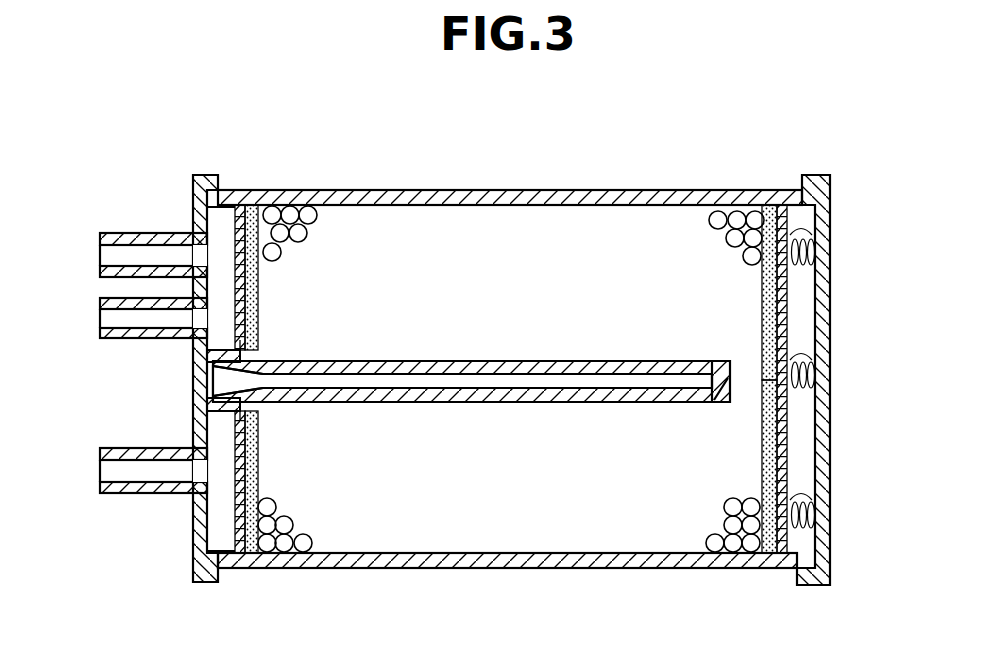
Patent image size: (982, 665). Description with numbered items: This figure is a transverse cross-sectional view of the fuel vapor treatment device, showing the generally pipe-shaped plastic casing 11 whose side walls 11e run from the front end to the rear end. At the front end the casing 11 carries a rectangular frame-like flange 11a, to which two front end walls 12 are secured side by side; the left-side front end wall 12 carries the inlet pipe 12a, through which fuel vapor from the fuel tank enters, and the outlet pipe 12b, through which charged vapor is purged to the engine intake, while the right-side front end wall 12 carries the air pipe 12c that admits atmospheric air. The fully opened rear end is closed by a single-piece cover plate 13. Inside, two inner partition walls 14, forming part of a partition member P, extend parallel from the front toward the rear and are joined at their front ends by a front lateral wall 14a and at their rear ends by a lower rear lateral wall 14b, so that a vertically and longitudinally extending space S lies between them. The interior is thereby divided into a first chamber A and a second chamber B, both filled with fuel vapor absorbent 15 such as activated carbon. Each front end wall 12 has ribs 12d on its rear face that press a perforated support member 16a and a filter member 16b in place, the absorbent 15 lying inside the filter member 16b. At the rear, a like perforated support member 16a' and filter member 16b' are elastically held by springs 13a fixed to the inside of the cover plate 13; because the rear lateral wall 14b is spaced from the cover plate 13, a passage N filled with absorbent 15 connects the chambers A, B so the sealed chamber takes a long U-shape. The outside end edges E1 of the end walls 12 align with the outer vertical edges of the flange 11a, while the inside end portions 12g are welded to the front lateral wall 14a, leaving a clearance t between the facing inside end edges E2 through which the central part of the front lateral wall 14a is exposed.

The casing 11 is at (405, 190).
The rectangular frame-like flange 11a is at (222, 188).
The side walls 11e is at (604, 190).
The front end wall 12 is at (196, 215).
The inlet pipe 12a is at (126, 233).
The outlet pipe 12b is at (120, 338).
The air pipe 12c is at (125, 493).
The ribs 12d is at (222, 358).
The inside end portions 12g is at (244, 355).
The cover plate 13 is at (820, 262).
The springs 13a is at (800, 378).
The inner partition walls 14 is at (505, 395).
The front lateral wall 14a is at (266, 366).
The rear lateral wall 14b is at (722, 370).
The fuel vapor absorbent 15 is at (716, 214).
The perforated support member 16a is at (301, 277).
The filter member 16b is at (317, 482).
The perforated support member 16a' is at (830, 336).
The filter member 16b' is at (722, 466).
The outside end edges E1 is at (205, 175).
The inside end edges E2 is at (205, 375).
The clearance t is at (145, 406).
The passage N is at (787, 405).
The space S is at (415, 380).
The partition member P is at (456, 404).
The first chamber A is at (525, 245).
The second chamber B is at (620, 500).